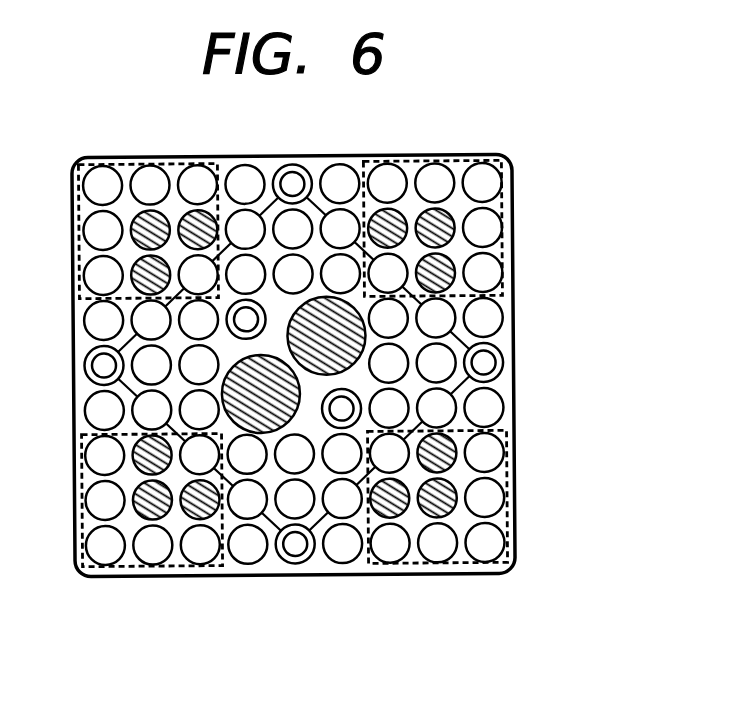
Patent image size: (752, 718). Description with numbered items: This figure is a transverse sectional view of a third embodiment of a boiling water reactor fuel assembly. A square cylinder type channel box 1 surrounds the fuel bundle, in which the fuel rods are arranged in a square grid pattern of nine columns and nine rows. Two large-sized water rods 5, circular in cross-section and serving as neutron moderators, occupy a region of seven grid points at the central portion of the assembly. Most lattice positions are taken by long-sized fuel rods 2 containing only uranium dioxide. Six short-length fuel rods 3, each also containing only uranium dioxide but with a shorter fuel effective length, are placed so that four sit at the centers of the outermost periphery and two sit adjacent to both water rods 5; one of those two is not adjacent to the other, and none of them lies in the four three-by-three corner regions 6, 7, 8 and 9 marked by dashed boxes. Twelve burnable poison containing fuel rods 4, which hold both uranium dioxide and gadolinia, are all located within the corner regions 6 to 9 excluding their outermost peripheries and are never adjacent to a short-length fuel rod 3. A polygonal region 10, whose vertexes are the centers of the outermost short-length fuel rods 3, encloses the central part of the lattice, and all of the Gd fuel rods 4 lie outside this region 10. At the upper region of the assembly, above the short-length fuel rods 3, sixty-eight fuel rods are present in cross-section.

The channel box 1 is at (513, 200).
The fuel rod 2 is at (482, 275).
The short-length fuel rod 3 is at (482, 370).
The burnable poison containing fuel rod 4 is at (440, 455).
The water rod 5 is at (258, 423).
The corner region 6 is at (175, 163).
The corner region 7 is at (390, 562).
The corner region 8 is at (420, 160).
The corner region 9 is at (188, 565).
The region 10 is at (311, 196).